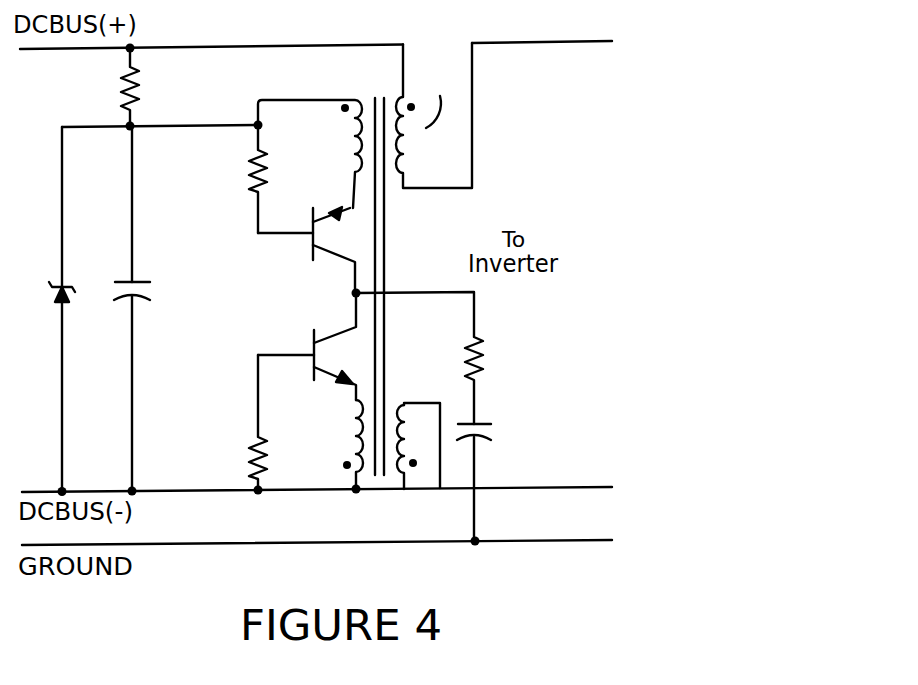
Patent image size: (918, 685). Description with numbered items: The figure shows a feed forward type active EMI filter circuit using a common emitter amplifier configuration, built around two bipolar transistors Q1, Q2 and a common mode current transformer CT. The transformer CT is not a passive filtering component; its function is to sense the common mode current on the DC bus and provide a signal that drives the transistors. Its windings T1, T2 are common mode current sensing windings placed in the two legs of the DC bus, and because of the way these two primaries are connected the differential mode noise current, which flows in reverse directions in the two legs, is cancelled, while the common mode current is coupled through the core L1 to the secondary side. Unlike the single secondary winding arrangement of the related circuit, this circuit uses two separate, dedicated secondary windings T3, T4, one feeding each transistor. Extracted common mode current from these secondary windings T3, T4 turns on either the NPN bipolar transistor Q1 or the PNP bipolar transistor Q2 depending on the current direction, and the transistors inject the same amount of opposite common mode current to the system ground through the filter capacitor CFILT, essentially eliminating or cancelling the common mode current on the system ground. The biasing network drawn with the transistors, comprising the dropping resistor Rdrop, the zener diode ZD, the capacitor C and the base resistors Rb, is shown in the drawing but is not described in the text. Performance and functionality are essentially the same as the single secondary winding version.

The dropping resistor Rdrop is at (171, 87).
The zener diode ZD is at (74, 309).
The capacitor C is at (133, 308).
The base resistor Rb is at (275, 308).
The NPN bipolar transistor Q1 is at (310, 250).
The PNP bipolar transistor Q2 is at (310, 346).
The secondary winding T3 is at (310, 154).
The secondary winding T4 is at (343, 444).
The common mode current sensing winding T1 is at (434, 115).
The common mode current sensing winding T2 is at (418, 446).
The transformer core L1 is at (400, 286).
The common mode current transformer CT is at (430, 99).
The filter capacitor CFILT is at (510, 482).